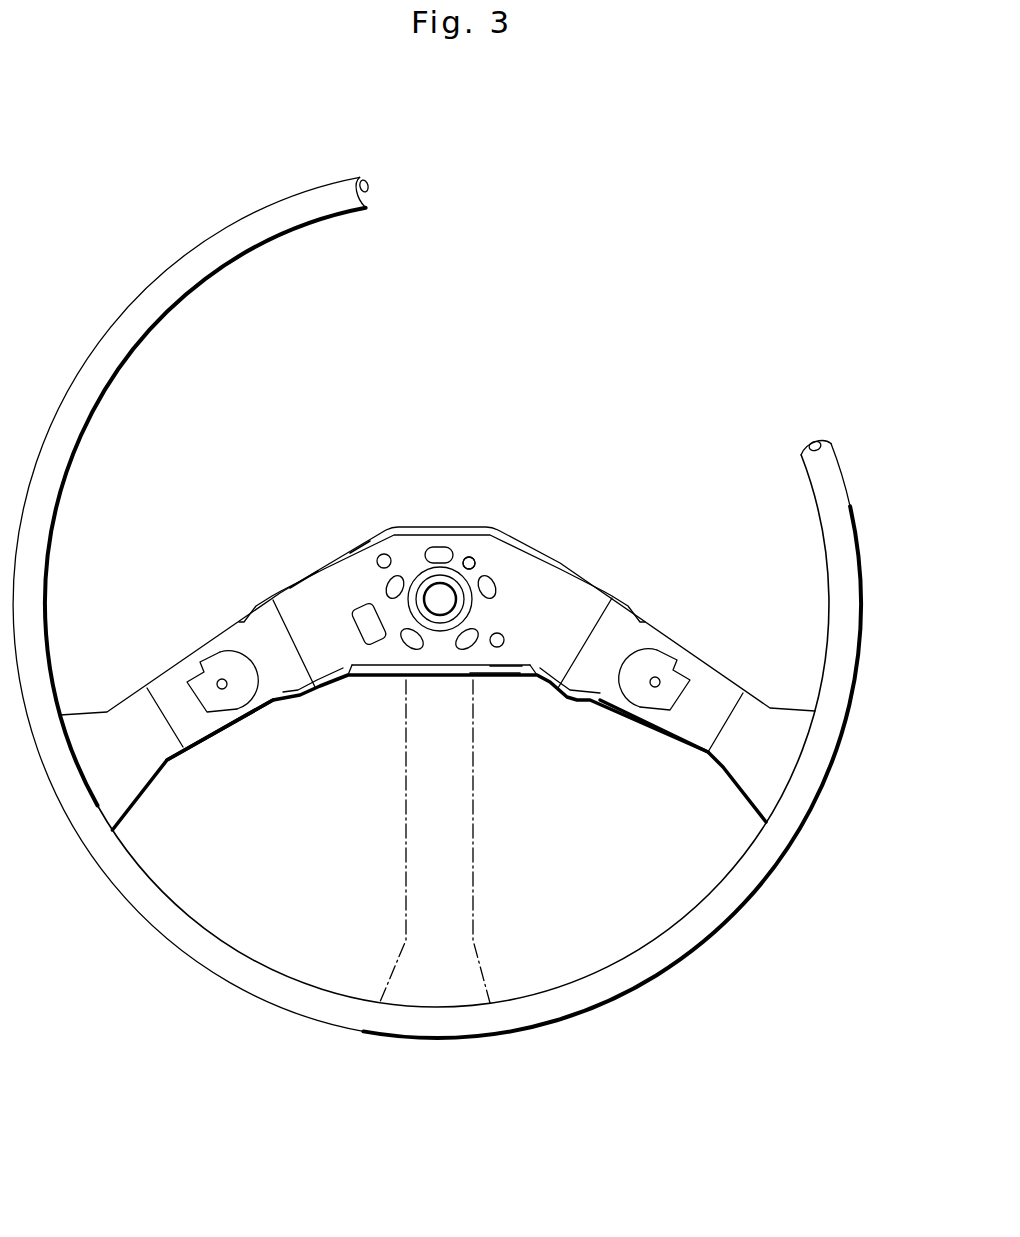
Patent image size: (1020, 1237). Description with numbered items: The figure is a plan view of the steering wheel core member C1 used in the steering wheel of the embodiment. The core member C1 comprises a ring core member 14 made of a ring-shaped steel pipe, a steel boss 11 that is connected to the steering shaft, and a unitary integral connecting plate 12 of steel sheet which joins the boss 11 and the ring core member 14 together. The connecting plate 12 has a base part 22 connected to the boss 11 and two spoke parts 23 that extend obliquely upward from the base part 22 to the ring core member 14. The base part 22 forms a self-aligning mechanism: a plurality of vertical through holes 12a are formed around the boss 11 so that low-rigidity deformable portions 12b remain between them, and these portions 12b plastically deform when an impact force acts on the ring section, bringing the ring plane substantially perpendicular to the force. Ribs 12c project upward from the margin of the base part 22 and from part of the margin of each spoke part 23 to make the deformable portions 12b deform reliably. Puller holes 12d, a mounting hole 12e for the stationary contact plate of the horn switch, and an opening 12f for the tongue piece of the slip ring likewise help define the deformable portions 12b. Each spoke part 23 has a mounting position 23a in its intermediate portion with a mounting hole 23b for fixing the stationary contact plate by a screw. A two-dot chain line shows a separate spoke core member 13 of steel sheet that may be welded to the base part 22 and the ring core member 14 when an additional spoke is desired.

The steering wheel core member C1 is at (641, 158).
The boss 11 is at (420, 570).
The connecting plate 12 is at (597, 531).
The through holes 12a is at (442, 553).
The deformable portions 12b is at (400, 575).
The ribs 12c is at (305, 576).
The puller holes 12d is at (383, 582).
The mounting hole 12e is at (475, 563).
The opening 12f is at (368, 623).
The spoke core member 13 is at (462, 892).
The ring core member 14 is at (300, 220).
The base part 22 is at (536, 583).
The spoke parts 23 is at (177, 692).
The mounting position 23a is at (248, 715).
The mounting hole 23b is at (220, 683).